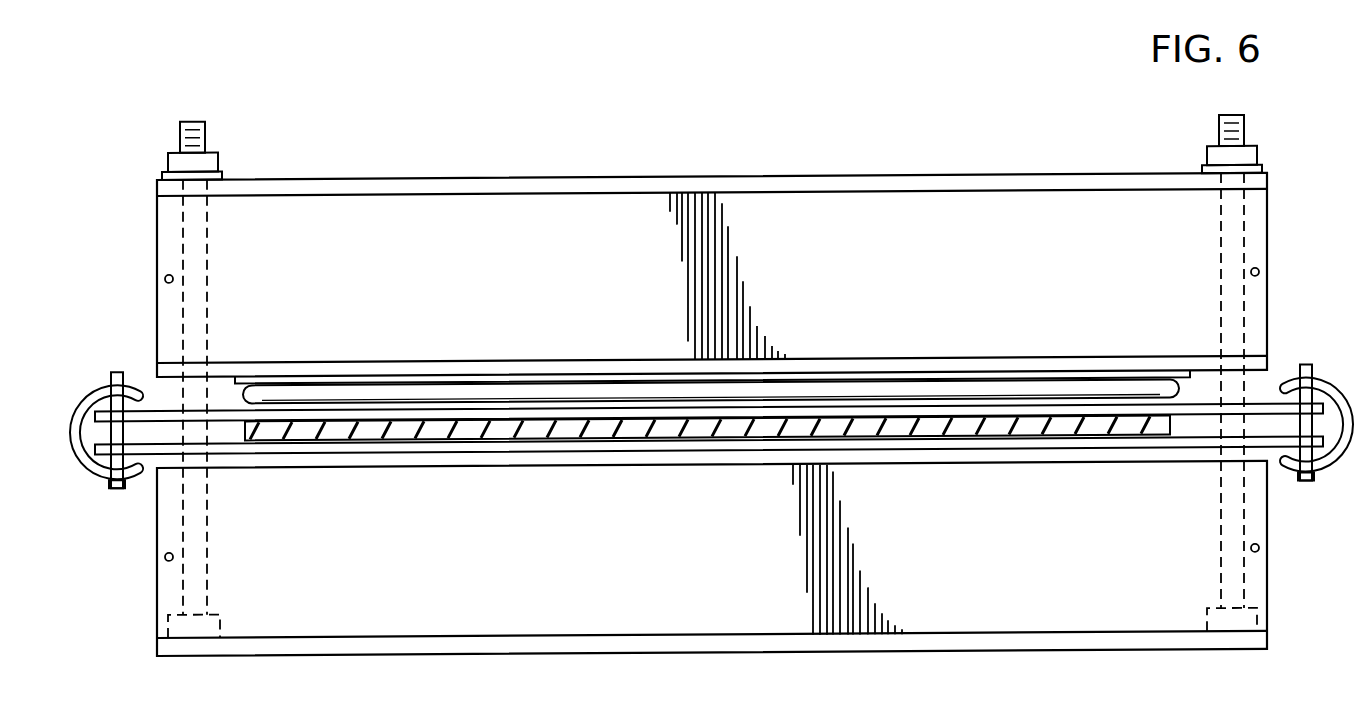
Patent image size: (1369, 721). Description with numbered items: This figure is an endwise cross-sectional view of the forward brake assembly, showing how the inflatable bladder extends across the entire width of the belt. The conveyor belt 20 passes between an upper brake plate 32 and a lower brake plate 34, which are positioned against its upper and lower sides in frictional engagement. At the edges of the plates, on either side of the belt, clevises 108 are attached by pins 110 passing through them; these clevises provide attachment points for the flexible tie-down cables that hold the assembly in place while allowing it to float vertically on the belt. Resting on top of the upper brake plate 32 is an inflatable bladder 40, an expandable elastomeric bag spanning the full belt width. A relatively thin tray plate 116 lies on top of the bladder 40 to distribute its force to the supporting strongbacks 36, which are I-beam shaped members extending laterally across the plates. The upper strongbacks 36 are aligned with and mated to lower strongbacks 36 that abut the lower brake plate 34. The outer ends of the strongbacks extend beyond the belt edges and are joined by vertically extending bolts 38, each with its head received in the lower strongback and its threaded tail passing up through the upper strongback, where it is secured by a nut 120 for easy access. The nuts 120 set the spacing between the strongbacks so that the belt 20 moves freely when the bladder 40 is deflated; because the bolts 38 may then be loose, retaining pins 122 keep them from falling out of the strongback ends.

The belt 20 is at (905, 443).
The upper brake plate 32 is at (825, 412).
The lower brake plate 34 is at (982, 455).
The strongback 36 is at (605, 287).
The bolt 38 is at (205, 135).
The inflatable bladder 40 is at (895, 393).
The clevis 108 is at (95, 382).
The pin 110 is at (122, 372).
The tray plate 116 is at (972, 380).
The nut 120 is at (216, 165).
The retaining pin 122 is at (165, 278).